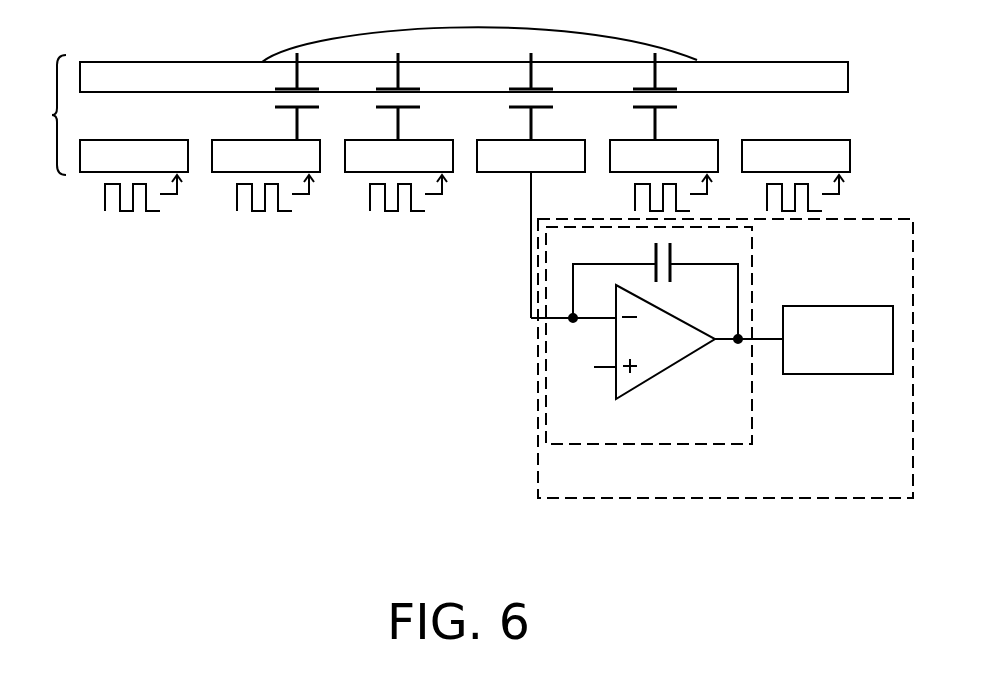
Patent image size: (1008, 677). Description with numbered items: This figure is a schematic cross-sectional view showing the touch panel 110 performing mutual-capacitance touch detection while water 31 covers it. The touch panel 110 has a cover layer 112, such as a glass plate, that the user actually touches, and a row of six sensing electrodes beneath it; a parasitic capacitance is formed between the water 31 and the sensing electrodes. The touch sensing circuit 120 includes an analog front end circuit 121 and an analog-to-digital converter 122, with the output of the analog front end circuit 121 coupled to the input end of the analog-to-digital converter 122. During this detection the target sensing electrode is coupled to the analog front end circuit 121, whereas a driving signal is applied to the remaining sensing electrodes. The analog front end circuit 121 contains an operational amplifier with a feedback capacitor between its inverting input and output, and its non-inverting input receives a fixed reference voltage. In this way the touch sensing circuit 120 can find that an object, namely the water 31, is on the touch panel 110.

The touch panel 110 is at (464, 168).
The cover layer 112 is at (797, 62).
The water 31 is at (640, 16).
The touch sensing circuit 120 is at (750, 498).
The analog front end circuit 121 is at (662, 444).
The analog-to-digital converter 122 is at (837, 374).